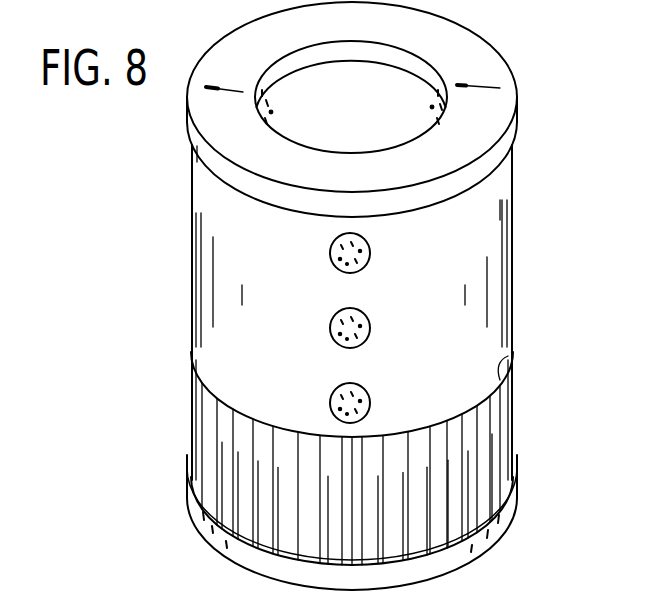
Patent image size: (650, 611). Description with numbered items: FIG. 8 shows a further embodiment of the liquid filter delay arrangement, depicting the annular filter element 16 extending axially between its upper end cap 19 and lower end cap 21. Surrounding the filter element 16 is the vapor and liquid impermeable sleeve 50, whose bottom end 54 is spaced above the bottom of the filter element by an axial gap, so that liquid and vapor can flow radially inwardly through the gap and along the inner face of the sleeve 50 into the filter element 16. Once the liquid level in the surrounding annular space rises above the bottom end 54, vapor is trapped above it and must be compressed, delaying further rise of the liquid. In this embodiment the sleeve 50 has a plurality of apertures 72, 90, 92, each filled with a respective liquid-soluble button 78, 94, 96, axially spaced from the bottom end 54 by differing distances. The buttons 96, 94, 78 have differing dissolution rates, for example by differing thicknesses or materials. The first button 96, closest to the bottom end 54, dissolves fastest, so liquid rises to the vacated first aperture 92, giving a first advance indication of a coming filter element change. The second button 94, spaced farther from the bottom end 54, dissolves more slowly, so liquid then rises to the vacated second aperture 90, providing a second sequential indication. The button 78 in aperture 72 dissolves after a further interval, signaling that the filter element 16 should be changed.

The annular filter element 16 is at (493, 443).
The upper end cap 19 is at (508, 143).
The lower end cap 21 is at (505, 523).
The sleeve 50 is at (499, 243).
The bottom end of sleeve 54 is at (510, 355).
The aperture 72 is at (331, 250).
The liquid-soluble button 78 is at (371, 250).
The second aperture 90 is at (330, 328).
The second liquid-soluble button 94 is at (372, 322).
The first aperture 92 is at (332, 400).
The first liquid-soluble button 96 is at (370, 398).